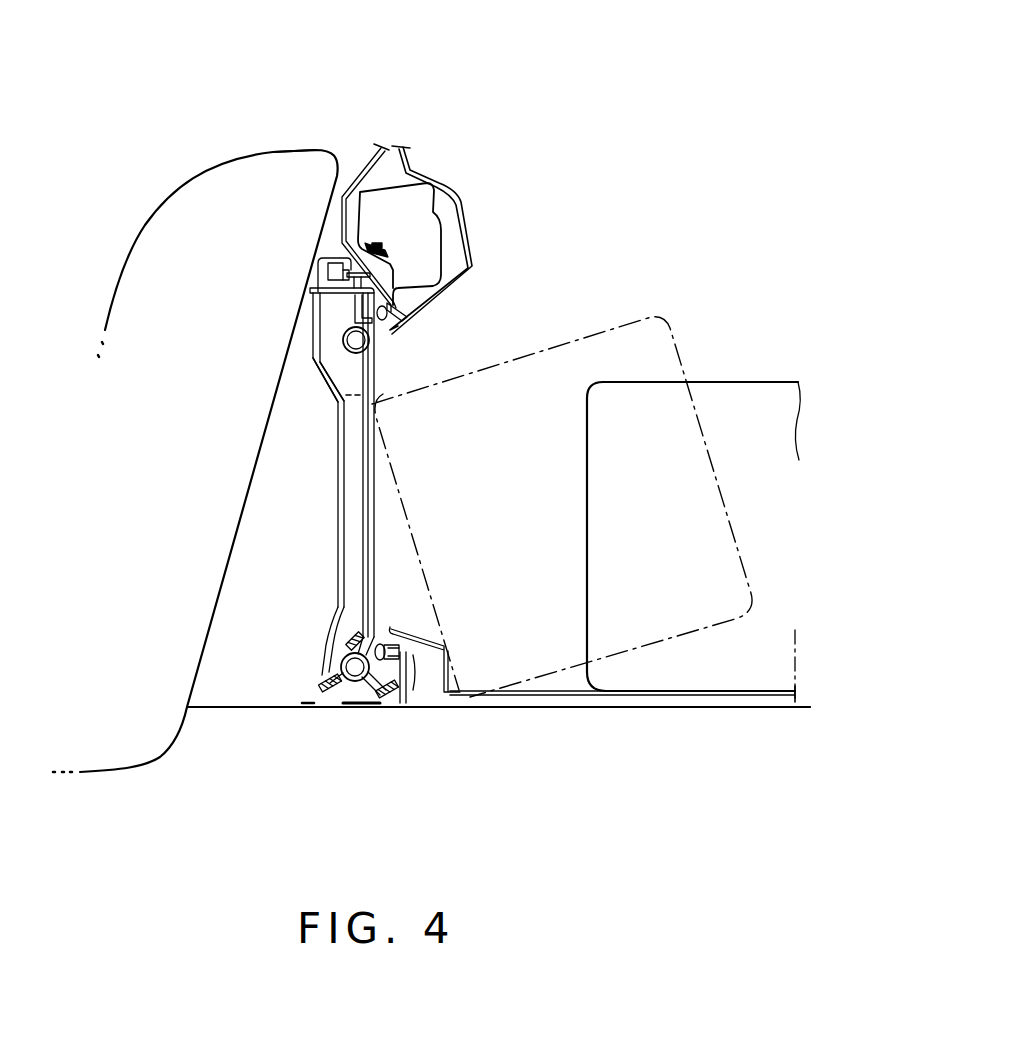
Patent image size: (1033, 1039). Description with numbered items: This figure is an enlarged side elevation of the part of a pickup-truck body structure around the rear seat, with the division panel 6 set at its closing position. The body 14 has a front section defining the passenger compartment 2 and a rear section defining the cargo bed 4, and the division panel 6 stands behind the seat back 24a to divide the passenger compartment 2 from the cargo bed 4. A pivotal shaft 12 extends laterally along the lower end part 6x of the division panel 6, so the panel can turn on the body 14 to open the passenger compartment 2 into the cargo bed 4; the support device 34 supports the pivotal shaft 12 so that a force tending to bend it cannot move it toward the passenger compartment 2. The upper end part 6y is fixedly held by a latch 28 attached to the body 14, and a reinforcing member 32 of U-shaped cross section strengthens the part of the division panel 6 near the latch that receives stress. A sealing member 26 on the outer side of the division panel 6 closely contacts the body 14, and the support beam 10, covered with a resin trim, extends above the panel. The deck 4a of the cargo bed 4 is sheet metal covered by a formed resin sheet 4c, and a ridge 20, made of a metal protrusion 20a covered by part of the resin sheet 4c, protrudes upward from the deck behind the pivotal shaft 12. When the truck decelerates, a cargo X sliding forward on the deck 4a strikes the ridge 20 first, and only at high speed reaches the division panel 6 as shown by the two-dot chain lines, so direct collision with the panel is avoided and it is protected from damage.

The passenger compartment 2 is at (70, 190).
The cargo bed 4 is at (659, 190).
The deck 4a is at (546, 688).
The formed resin sheet 4c is at (520, 700).
The division panel 6 is at (380, 500).
The lower end part of the division panel 6x is at (317, 677).
The upper end part of the division panel 6y is at (335, 348).
The support beam 10 is at (455, 170).
The pivotal shaft 12 is at (353, 672).
The body 14 is at (305, 733).
The ridge 20 is at (413, 626).
The protrusion 20a is at (415, 690).
The seat back 24a is at (252, 150).
The sealing member 26 is at (383, 320).
The latch 28 is at (333, 254).
The reinforcing member 32 is at (350, 312).
The support device 34 is at (321, 698).
The cargo X is at (660, 324).